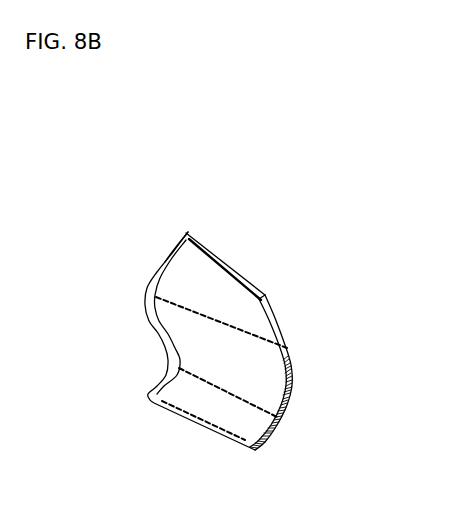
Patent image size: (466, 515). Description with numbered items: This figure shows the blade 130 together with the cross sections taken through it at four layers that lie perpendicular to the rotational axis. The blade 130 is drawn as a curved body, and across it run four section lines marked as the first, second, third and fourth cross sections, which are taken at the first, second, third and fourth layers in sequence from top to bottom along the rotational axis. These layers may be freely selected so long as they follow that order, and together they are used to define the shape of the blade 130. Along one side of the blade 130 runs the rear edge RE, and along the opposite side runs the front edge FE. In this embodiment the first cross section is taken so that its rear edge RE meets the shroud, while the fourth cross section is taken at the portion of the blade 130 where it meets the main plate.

The blade 130 is at (162, 212).
The rear edge RE is at (147, 284).
The front edge FE is at (291, 400).